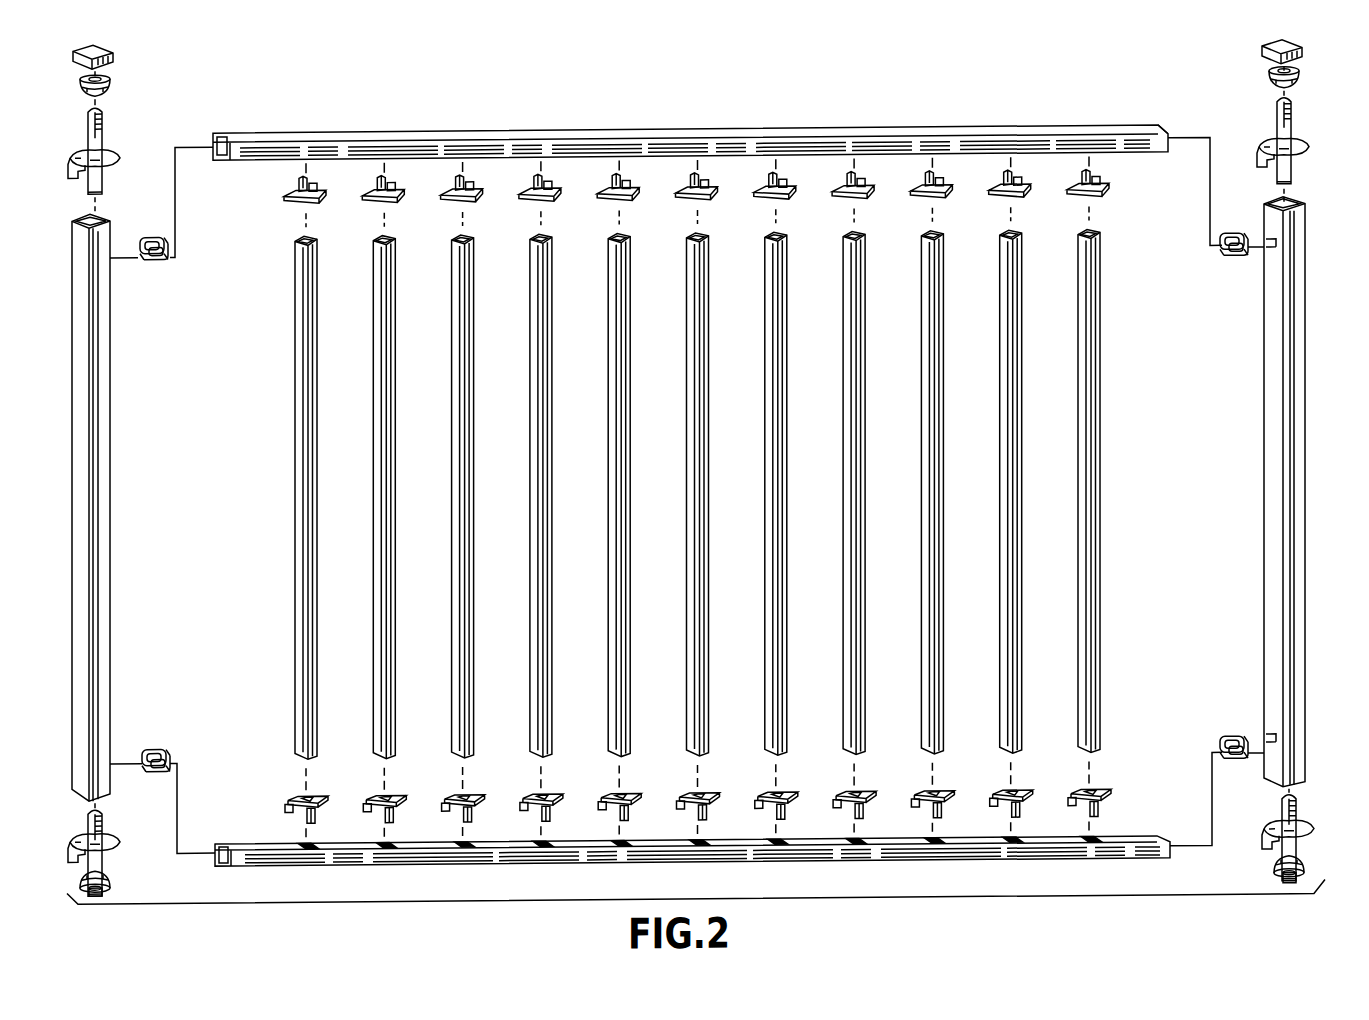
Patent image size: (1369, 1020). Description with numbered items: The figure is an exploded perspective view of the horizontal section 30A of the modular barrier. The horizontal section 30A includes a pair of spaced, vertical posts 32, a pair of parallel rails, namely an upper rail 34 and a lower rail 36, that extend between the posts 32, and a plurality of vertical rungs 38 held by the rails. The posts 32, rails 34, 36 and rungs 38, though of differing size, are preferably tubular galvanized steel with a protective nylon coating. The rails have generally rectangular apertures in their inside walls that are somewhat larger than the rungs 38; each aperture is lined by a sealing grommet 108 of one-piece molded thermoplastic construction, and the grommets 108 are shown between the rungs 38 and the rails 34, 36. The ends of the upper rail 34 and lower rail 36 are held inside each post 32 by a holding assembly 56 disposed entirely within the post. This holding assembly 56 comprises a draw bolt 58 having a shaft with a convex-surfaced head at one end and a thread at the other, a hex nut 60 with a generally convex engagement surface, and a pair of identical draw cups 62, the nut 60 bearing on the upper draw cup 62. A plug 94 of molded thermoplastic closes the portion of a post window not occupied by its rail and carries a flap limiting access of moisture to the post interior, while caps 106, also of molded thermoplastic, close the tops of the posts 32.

The horizontal section 30A is at (951, 121).
The vertical post 32 is at (108, 506).
The upper rail 34 is at (680, 136).
The lower rail 36 is at (888, 863).
The vertical rung 38 is at (310, 575).
The holding assembly 56 is at (1311, 134).
The draw bolt 58 is at (1293, 191).
The hex nut 60 is at (1297, 91).
The draw cup 62 is at (1302, 161).
The plug 94 is at (163, 268).
The cap 106 is at (112, 63).
The sealing grommet 108 is at (292, 196).